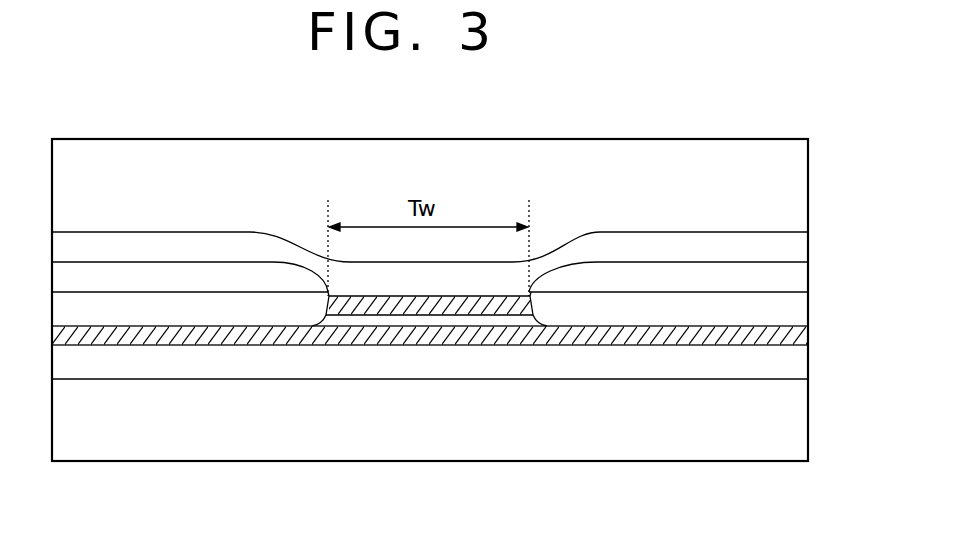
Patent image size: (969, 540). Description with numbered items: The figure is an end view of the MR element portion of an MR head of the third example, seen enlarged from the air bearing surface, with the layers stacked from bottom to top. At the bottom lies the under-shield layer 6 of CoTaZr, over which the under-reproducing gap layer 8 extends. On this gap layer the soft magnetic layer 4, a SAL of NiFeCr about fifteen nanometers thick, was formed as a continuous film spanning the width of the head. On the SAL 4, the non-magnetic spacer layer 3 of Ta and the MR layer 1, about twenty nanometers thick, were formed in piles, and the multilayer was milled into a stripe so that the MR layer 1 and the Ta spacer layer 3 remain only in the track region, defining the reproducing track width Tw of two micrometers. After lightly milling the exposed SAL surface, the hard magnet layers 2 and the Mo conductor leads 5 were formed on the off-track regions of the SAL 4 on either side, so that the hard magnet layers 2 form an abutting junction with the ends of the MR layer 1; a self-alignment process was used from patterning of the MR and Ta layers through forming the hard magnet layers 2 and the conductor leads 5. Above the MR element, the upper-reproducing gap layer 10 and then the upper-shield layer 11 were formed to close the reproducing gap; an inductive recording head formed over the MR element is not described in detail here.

The MR layer 1 is at (497, 300).
The hard magnet layers 2 is at (752, 307).
The non-magnetic spacer layer 3 is at (417, 322).
The soft magnetic layer 4 is at (313, 323).
The conductor leads 5 is at (742, 278).
The under-shield layer 6 is at (770, 405).
The under-reproducing gap layer 8 is at (745, 360).
The upper-reproducing gap layer 10 is at (740, 243).
The upper-shield layer 11 is at (766, 204).